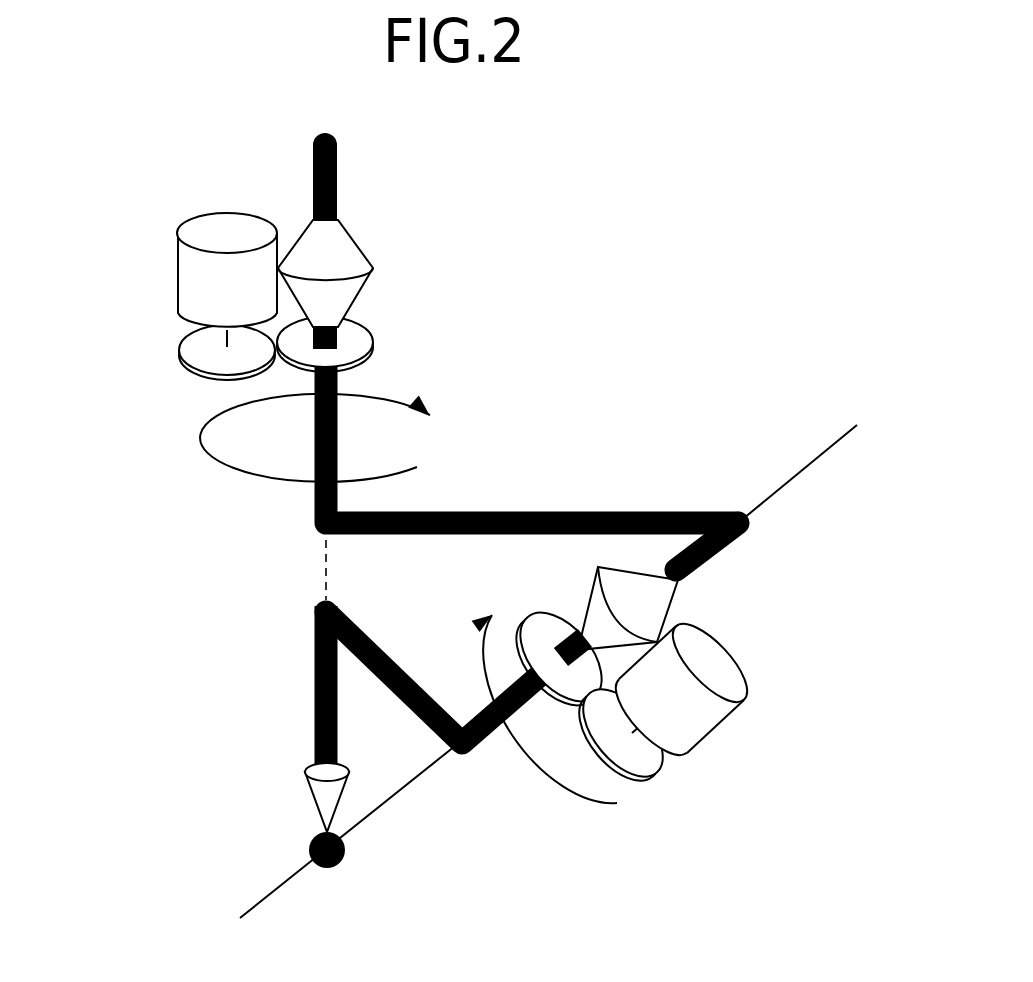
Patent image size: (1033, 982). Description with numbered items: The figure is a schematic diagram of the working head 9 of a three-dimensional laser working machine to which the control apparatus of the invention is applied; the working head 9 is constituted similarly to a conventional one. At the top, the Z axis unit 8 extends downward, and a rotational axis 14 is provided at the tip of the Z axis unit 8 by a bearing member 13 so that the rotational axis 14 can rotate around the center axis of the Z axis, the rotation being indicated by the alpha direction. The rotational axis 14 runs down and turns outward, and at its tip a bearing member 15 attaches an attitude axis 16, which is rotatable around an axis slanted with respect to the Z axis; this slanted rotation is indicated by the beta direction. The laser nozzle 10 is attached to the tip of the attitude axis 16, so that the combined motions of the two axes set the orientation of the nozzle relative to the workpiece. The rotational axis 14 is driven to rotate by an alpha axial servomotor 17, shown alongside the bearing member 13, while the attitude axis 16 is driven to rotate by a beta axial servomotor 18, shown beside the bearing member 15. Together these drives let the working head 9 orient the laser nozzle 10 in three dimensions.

The Z axis unit 8 is at (335, 173).
The working head 9 is at (459, 525).
The laser nozzle 10 is at (310, 790).
The bearing member 13 is at (340, 246).
The rotational axis 14 is at (318, 508).
The bearing member 15 is at (653, 588).
The attitude axis 16 is at (480, 727).
The alpha axial servomotor 17 is at (193, 272).
The beta axial servomotor 18 is at (693, 725).